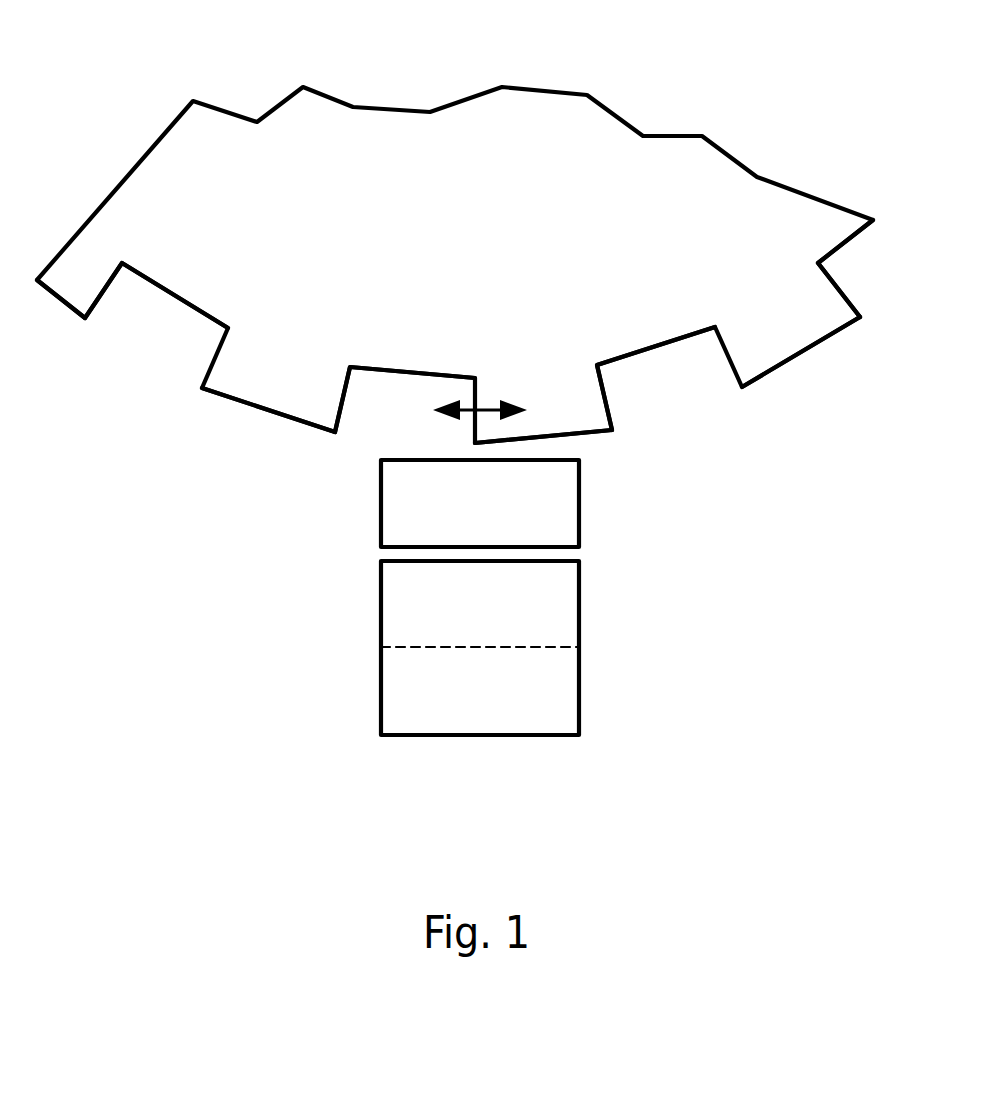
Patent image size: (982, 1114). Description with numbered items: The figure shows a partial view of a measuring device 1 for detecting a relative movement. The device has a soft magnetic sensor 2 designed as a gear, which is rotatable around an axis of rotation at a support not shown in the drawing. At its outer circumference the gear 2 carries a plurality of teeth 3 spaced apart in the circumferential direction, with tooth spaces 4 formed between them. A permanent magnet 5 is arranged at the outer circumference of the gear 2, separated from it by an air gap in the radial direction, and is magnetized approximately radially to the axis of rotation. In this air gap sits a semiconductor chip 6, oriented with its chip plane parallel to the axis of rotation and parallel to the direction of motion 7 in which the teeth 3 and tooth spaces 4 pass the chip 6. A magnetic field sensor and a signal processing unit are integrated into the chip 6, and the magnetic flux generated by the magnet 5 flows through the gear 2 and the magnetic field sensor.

The measuring device 1 is at (752, 900).
The soft magnetic sensor 2 is at (592, 122).
The teeth 3 is at (88, 296).
The tooth spaces 4 is at (165, 345).
The permanent magnet 5 is at (570, 660).
The semiconductor chip 6 is at (498, 529).
The direction of motion 7 is at (485, 407).